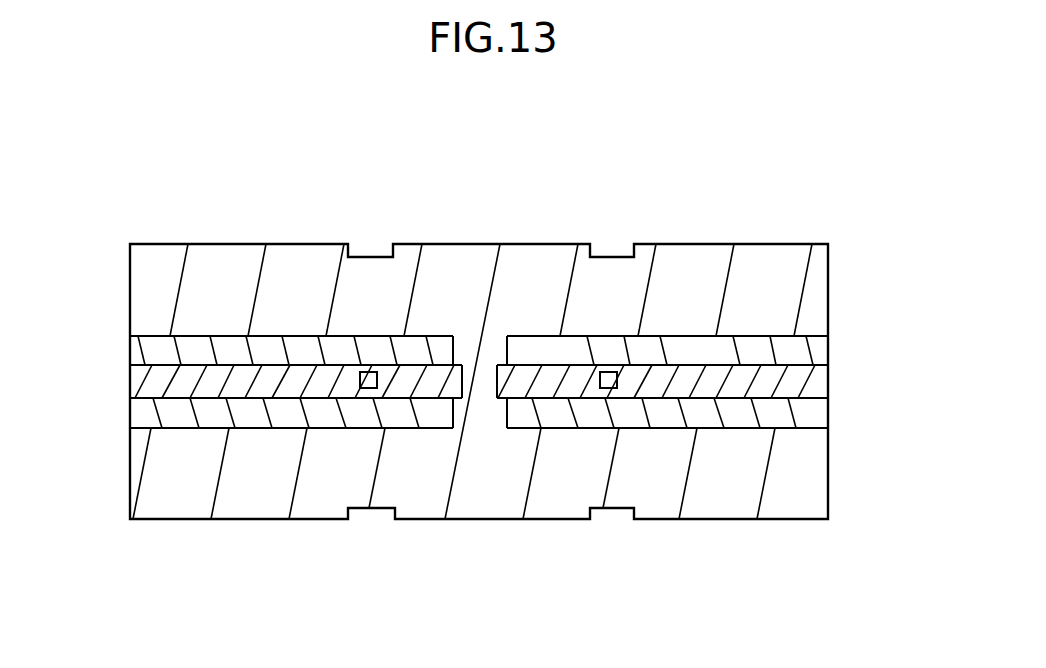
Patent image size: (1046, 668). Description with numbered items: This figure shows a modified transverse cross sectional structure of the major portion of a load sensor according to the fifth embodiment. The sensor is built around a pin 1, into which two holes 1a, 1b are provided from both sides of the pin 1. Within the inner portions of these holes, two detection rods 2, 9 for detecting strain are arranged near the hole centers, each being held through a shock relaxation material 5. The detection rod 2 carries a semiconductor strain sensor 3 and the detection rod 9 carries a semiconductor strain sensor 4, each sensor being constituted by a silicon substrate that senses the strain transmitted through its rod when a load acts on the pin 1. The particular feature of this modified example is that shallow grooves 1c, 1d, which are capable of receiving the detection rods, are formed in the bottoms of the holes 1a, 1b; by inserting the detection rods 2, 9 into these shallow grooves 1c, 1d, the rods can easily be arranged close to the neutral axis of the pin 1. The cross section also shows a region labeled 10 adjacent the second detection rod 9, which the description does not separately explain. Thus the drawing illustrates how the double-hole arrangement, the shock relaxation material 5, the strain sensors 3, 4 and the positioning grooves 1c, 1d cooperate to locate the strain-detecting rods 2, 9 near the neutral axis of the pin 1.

The pin 1 is at (164, 268).
The hole 1a is at (188, 336).
The hole 1b is at (750, 335).
The shallow groove 1c is at (460, 400).
The shallow groove 1d is at (498, 400).
The detection rod 2 is at (431, 340).
The semiconductor strain sensor 3 is at (370, 372).
The semiconductor strain sensor 4 is at (603, 372).
The shock relaxation material 5 is at (268, 357).
The detection rod 9 is at (695, 358).
The insulating layer 10 is at (532, 347).